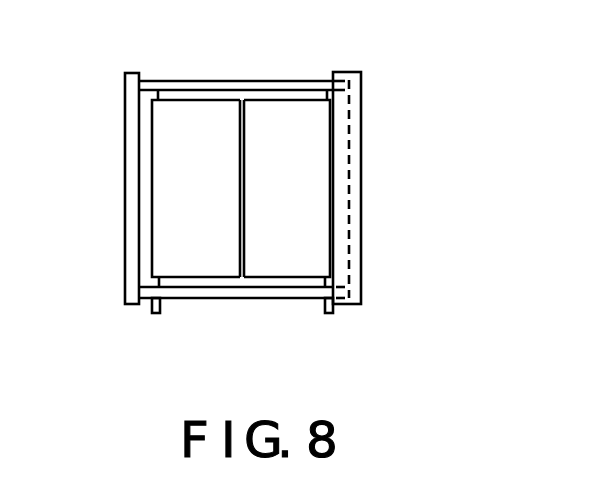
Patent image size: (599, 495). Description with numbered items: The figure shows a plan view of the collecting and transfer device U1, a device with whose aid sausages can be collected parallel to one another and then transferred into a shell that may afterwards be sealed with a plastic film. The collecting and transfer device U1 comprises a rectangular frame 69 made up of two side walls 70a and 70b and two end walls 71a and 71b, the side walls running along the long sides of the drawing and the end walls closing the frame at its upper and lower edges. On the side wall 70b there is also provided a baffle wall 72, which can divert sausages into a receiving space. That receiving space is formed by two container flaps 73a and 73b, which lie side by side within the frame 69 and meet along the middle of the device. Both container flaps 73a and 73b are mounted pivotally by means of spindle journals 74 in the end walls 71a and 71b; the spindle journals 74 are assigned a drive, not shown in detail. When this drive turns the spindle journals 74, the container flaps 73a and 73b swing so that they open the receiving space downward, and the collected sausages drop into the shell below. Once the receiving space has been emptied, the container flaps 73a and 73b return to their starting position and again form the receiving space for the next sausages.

The rectangular frame 69 is at (222, 70).
The side wall 70a is at (128, 193).
The side wall 70b is at (352, 198).
The end wall 71a is at (302, 292).
The end wall 71b is at (293, 82).
The baffle wall 72 is at (363, 142).
The container flap 73a is at (182, 118).
The container flap 73b is at (317, 128).
The spindle journal 74 is at (155, 313).
The collecting and transfer device U1 is at (237, 322).